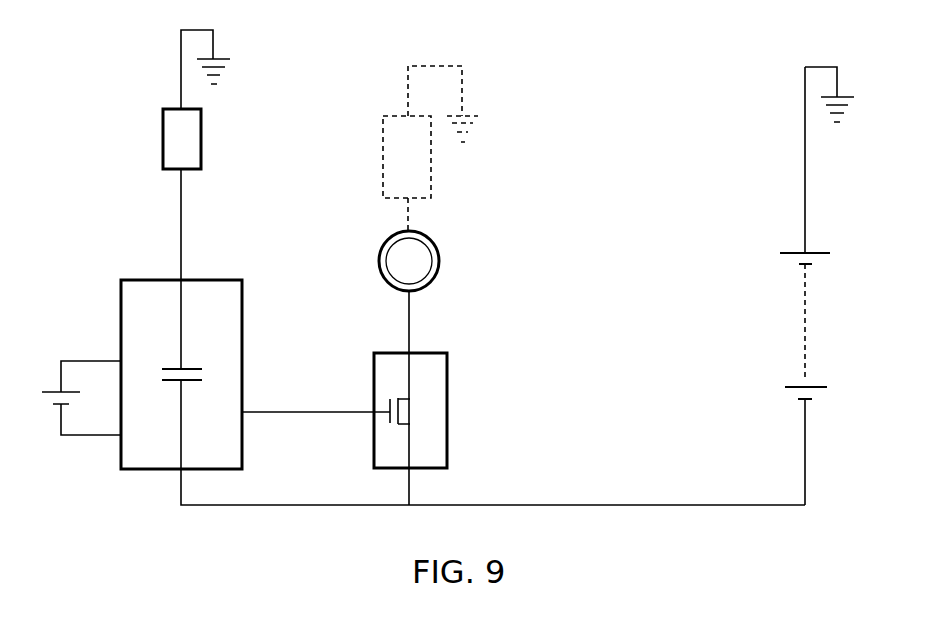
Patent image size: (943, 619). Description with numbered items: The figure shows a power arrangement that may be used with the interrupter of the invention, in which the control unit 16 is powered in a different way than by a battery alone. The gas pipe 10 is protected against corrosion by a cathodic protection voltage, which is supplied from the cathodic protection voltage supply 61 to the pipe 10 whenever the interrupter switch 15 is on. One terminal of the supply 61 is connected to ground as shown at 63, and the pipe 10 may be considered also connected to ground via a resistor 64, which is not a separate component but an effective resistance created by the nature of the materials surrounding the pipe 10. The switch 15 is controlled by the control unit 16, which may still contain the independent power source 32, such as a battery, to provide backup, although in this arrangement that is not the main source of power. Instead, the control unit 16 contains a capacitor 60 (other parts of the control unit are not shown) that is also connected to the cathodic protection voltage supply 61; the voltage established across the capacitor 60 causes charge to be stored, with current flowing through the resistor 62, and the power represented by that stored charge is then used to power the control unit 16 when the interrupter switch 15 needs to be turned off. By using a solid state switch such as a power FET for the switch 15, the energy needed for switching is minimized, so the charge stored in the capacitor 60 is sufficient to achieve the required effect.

The gas pipe 10 is at (439, 262).
The switch 15 is at (391, 470).
The control unit 16 is at (139, 470).
The power source 32 is at (56, 404).
The capacitor 60 is at (193, 368).
The cathodic protection voltage supply 61 is at (818, 327).
The resistor 62 is at (201, 147).
The ground connection 63 is at (837, 81).
The resistor 64 is at (431, 177).